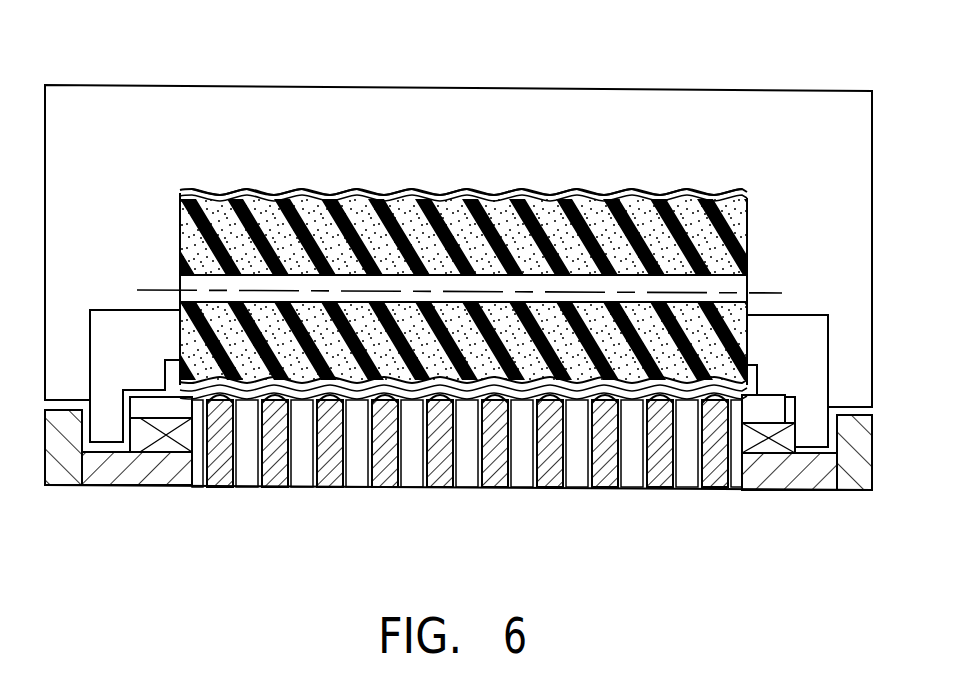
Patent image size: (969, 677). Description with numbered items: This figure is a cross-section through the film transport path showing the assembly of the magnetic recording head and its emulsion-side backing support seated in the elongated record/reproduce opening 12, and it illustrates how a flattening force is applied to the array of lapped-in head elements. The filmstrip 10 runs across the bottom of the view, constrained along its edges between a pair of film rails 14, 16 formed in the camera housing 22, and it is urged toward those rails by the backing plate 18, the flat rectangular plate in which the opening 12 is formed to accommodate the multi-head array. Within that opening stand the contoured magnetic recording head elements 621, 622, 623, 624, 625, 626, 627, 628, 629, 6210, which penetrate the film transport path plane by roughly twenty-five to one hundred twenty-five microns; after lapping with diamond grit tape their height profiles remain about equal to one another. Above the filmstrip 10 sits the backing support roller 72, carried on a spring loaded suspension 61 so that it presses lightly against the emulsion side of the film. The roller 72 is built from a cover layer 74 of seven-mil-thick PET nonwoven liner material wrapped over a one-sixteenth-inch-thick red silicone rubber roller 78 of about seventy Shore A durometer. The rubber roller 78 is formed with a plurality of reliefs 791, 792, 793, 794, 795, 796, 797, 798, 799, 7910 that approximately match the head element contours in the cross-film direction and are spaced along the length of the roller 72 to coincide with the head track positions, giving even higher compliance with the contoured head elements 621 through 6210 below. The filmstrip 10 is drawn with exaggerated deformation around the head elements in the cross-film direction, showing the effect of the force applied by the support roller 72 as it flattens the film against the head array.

The filmstrip 10 is at (633, 402).
The record/reproduce opening 12 is at (197, 489).
The film rail 14 is at (127, 312).
The film rail 16 is at (817, 316).
The backing plate 18 is at (153, 416).
The camera housing 22 is at (782, 93).
The spring loaded suspension 61 is at (768, 292).
The backing support roller 72 is at (169, 227).
The cover layer 74 is at (748, 203).
The silicone rubber roller 78 is at (748, 233).
The relief 791 is at (220, 192).
The relief 792 is at (277, 192).
The relief 793 is at (330, 192).
The relief 794 is at (385, 192).
The relief 795 is at (440, 192).
The relief 796 is at (495, 192).
The relief 797 is at (550, 192).
The relief 798 is at (605, 192).
The relief 799 is at (660, 192).
The relief 7910 is at (715, 192).
The magnetic recording head element 621 is at (220, 489).
The magnetic recording head element 622 is at (275, 489).
The magnetic recording head element 623 is at (330, 489).
The magnetic recording head element 624 is at (385, 489).
The magnetic recording head element 625 is at (440, 489).
The magnetic recording head element 626 is at (495, 489).
The magnetic recording head element 627 is at (550, 489).
The magnetic recording head element 628 is at (603, 489).
The magnetic recording head element 629 is at (662, 489).
The magnetic recording head element 6210 is at (714, 489).